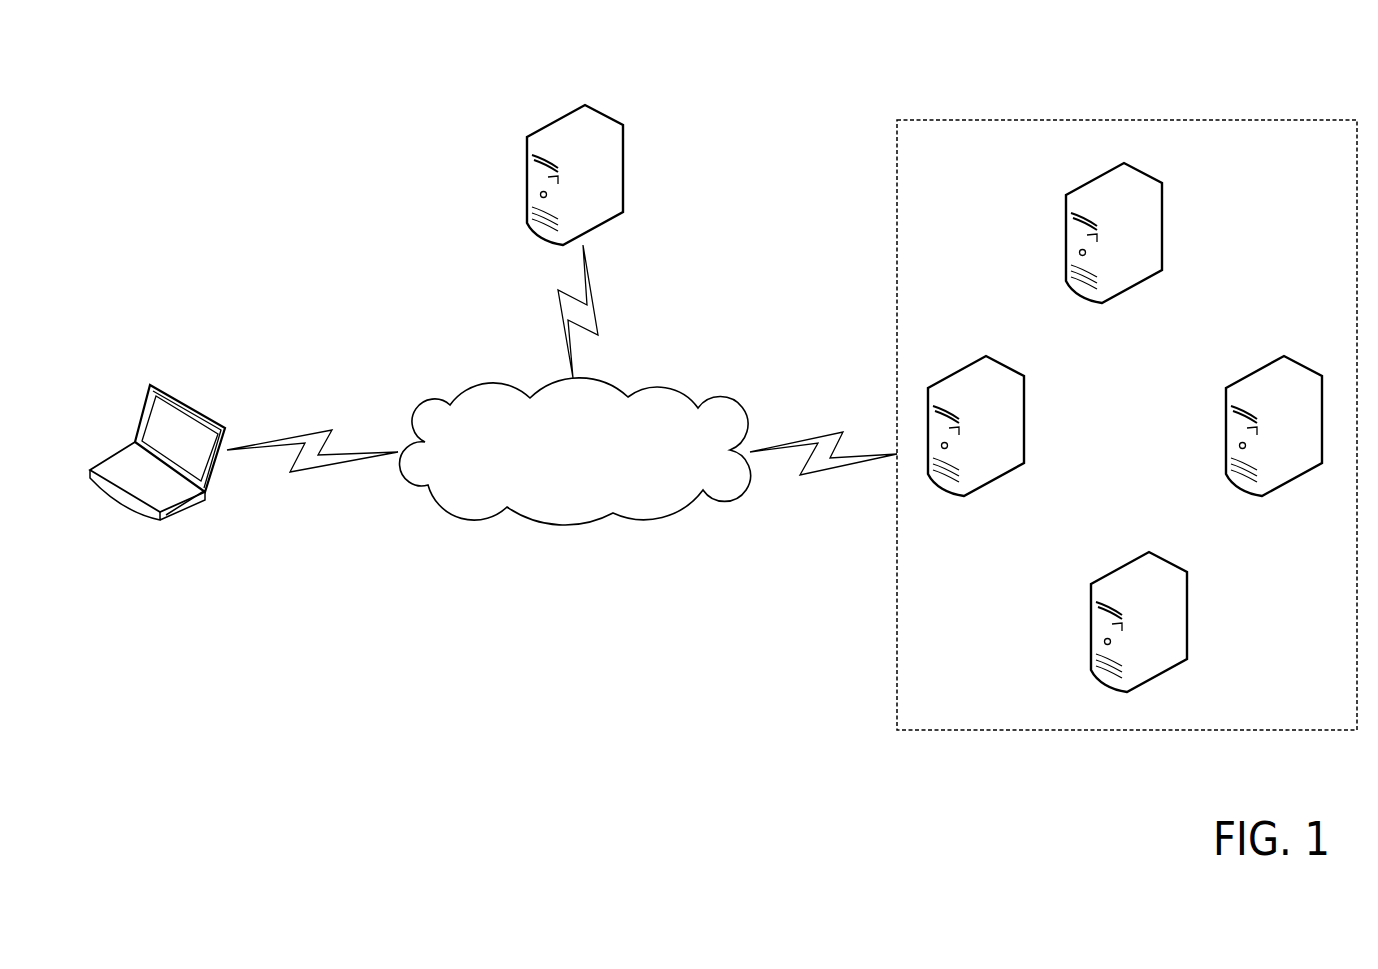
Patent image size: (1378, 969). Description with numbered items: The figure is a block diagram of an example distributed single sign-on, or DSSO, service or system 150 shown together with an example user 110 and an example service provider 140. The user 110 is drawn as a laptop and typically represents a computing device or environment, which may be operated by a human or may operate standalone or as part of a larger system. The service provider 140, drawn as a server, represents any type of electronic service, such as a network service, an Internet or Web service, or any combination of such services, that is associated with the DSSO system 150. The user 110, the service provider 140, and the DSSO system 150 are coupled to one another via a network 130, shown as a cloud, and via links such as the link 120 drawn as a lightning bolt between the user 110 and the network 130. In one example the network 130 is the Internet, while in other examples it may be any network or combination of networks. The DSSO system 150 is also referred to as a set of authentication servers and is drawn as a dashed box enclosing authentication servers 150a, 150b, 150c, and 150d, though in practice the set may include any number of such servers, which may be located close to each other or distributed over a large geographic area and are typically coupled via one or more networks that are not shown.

The user 110 is at (160, 520).
The link 120 is at (347, 465).
The network 130 is at (575, 451).
The service provider 140 is at (527, 137).
The distributed single sign-on system 150 is at (897, 120).
The authentication server 150a is at (1066, 195).
The authentication server 150b is at (988, 357).
The authentication server 150c is at (1287, 356).
The authentication server 150d is at (1151, 552).